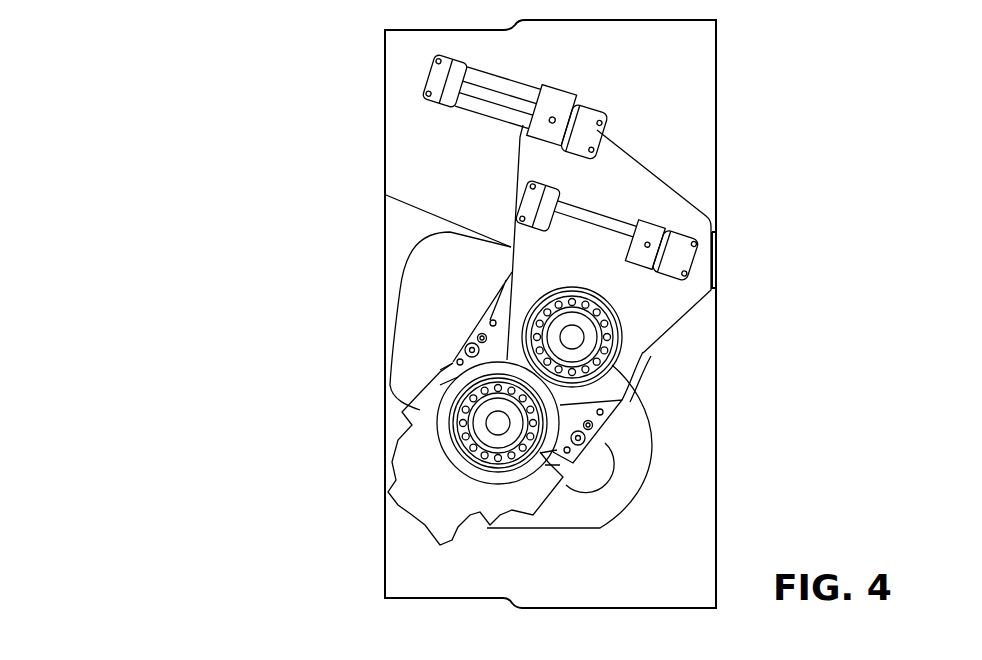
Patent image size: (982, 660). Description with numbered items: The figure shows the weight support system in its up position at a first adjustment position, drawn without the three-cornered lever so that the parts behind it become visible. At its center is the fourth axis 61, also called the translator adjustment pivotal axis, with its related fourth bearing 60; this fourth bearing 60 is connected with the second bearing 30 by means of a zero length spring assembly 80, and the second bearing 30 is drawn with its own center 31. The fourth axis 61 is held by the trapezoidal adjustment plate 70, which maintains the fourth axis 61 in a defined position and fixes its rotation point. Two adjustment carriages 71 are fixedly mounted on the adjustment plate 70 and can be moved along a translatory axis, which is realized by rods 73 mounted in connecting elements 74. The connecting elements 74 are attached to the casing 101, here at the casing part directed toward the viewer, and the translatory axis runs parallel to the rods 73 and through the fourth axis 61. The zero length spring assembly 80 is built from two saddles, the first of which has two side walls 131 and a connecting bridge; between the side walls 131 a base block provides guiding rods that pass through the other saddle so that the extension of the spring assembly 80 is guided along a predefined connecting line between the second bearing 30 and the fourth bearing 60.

The second bearing 30 is at (490, 410).
The pulley shaft 31 is at (492, 428).
The fourth bearing 60 is at (580, 353).
The fourth axis 61 is at (572, 337).
The adjustment plate 70 is at (650, 198).
The adjustment carriages 71 is at (556, 108).
The rods 73 is at (600, 227).
The connecting elements 74 is at (430, 83).
The zero length spring assembly 80 is at (598, 466).
The casing 101 is at (695, 465).
The side walls 131 is at (420, 507).